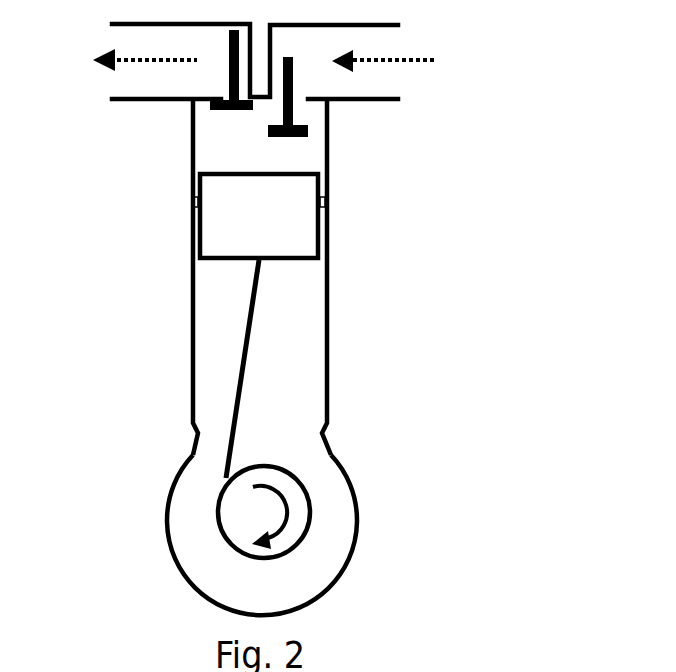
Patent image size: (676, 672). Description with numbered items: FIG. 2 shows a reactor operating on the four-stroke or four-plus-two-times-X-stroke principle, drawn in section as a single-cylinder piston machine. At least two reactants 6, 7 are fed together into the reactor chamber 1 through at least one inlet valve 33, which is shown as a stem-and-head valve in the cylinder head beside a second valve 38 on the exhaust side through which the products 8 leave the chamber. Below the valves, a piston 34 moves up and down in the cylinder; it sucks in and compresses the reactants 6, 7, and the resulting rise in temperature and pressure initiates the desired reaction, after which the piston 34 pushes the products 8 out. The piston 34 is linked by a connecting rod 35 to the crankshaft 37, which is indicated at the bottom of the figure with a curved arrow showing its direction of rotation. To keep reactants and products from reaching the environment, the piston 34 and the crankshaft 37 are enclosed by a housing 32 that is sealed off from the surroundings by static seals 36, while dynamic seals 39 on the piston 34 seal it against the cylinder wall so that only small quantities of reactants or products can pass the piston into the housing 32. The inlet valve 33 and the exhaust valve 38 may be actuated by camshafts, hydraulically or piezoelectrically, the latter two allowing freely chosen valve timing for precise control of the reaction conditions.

The reactor chamber 1 is at (233, 148).
The reactant 6 is at (417, 59).
The reactant 7 is at (417, 59).
The products 8 is at (111, 60).
The housing 32 is at (260, 443).
The inlet valve 33 is at (310, 129).
The piston 34 is at (260, 228).
The connecting rod 35 is at (248, 335).
The static seals 36 is at (332, 420).
The crankshaft 37 is at (265, 507).
The exhaust valve 38 is at (237, 106).
The dynamic seals 39 is at (196, 203).